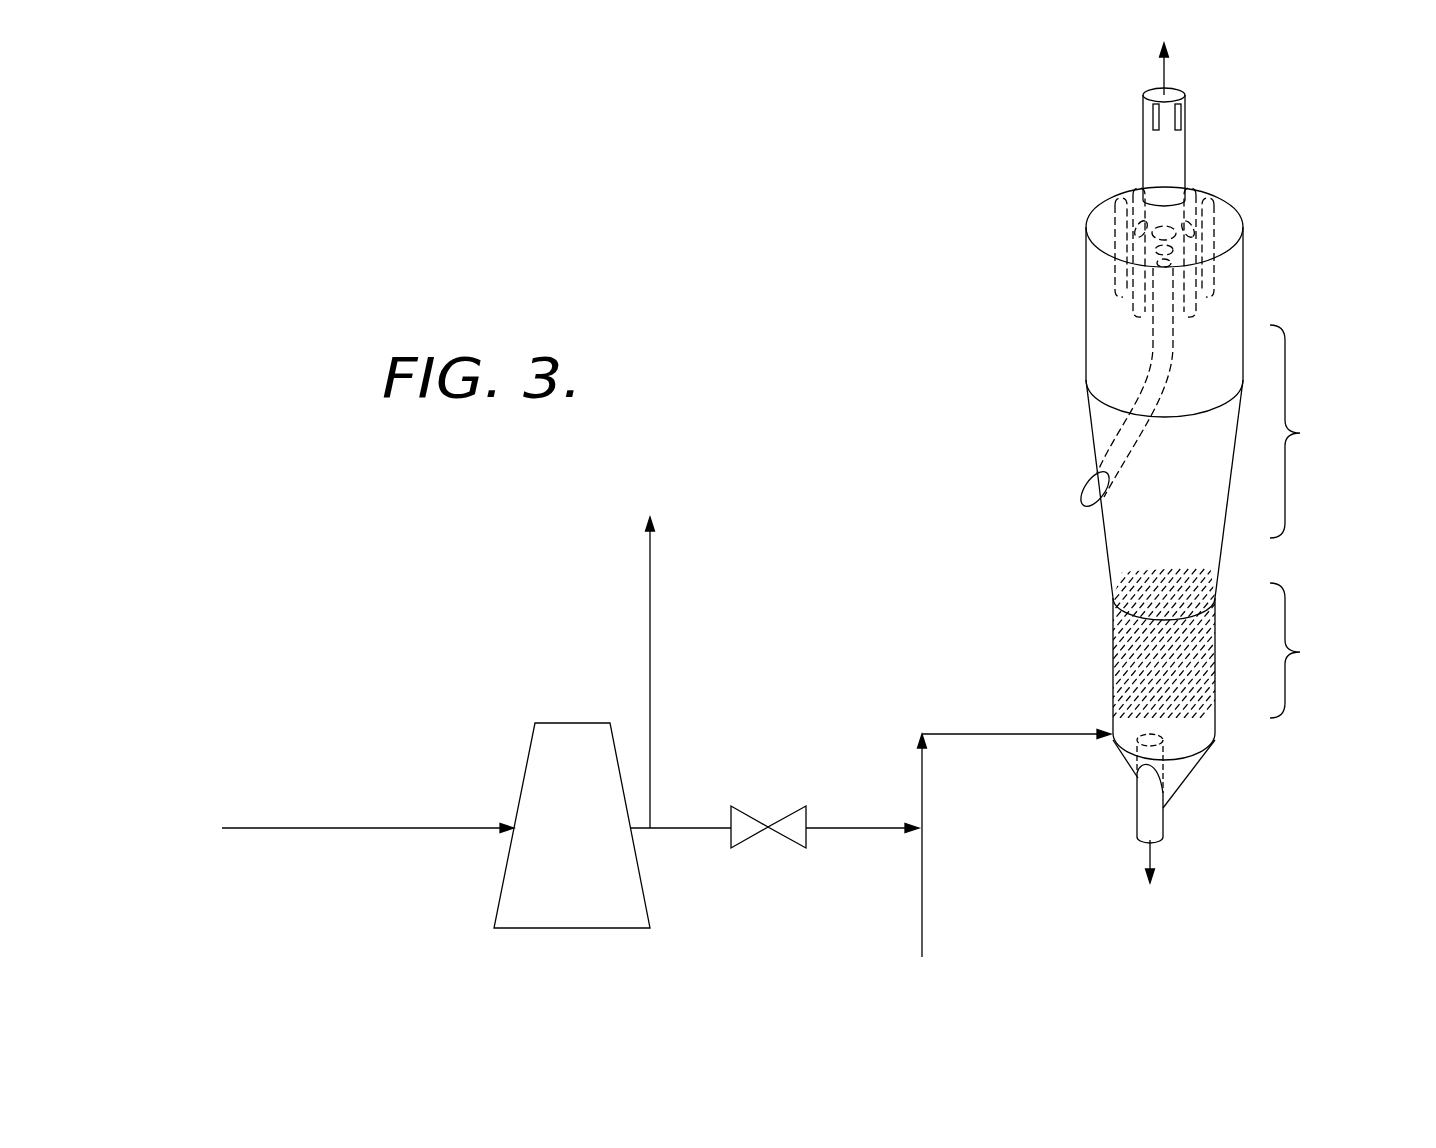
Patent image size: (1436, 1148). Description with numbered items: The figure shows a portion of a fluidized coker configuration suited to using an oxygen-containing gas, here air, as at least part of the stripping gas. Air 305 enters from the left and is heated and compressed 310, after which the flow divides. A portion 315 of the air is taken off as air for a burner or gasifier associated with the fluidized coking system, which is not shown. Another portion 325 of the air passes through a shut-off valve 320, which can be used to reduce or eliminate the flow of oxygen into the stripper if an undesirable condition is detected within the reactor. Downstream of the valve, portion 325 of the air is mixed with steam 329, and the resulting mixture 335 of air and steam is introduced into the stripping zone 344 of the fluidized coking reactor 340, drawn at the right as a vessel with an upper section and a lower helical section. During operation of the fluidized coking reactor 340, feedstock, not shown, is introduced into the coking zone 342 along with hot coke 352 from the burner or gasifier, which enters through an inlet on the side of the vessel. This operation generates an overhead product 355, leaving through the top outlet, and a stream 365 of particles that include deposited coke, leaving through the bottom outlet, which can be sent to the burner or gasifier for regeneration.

The air 305 is at (280, 827).
The heating and compressing 310 is at (570, 723).
The portion of the air 315 is at (650, 609).
The shut-off valve 320 is at (757, 818).
The portion of the air 325 is at (857, 829).
The steam 329 is at (922, 903).
The mixture of air and steam 335 is at (997, 734).
The fluidized coking reactor 340 is at (1084, 313).
The coking zone 342 is at (1316, 431).
The stripping zone 344 is at (1316, 650).
The hot coke 352 is at (1081, 525).
The overhead product 355 is at (1162, 68).
The stream of particles 365 is at (1153, 859).